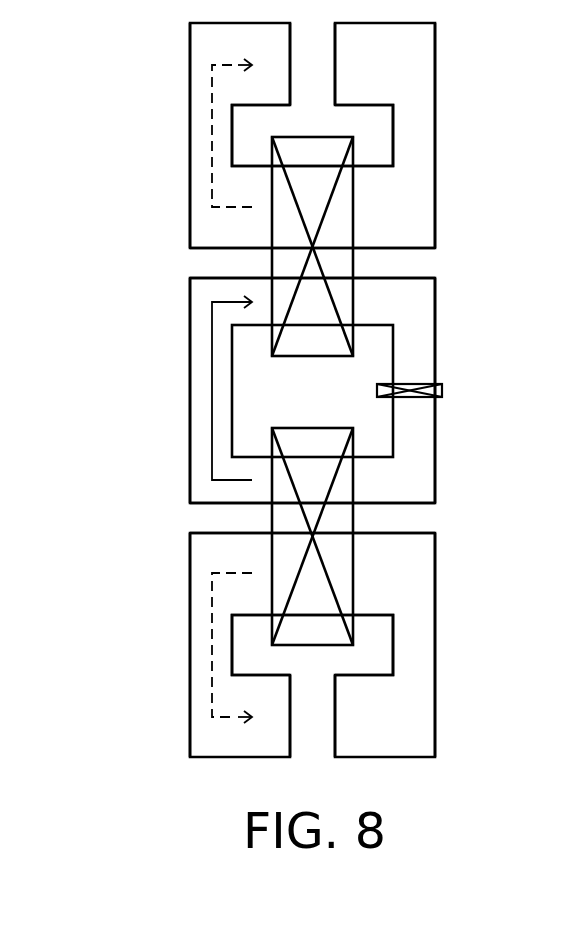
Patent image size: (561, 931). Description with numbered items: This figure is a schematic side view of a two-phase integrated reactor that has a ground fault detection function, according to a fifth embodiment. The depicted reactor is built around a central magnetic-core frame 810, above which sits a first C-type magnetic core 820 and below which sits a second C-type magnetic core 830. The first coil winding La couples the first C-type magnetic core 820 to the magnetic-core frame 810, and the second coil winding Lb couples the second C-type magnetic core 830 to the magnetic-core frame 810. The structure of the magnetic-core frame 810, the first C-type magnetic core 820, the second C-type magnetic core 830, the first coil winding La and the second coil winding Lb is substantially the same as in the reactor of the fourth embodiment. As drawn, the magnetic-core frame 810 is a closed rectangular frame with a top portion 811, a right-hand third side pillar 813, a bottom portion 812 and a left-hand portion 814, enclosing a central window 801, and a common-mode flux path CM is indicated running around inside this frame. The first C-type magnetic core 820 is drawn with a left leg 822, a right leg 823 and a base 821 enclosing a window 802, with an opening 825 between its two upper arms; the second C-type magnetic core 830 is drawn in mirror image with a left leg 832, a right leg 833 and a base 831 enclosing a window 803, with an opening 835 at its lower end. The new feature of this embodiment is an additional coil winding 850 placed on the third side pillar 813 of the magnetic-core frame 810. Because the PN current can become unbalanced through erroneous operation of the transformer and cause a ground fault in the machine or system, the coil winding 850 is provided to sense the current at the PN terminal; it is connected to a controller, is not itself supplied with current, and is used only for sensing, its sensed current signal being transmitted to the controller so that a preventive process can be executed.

The first C-type magnetic core 820 is at (189, 37).
The left leg of upper core 822 is at (198, 136).
The right leg of upper core 823 is at (423, 135).
The base of upper core 821 is at (368, 215).
The winding window of upper core 802 is at (255, 122).
The air gap of upper core 825 is at (316, 52).
The first coil winding La is at (313, 136).
The magnetic-core frame 810 is at (189, 292).
The top portion of middle core 811 is at (368, 300).
The third side pillar 813 is at (423, 346).
The bottom portion of middle core 812 is at (368, 475).
The left portion of middle core 814 is at (198, 392).
The winding window of middle core 801 is at (255, 376).
The common mode flux path CM is at (210, 450).
The coil winding 850 is at (443, 390).
The second coil winding Lb is at (313, 647).
The second C-type magnetic core 830 is at (189, 547).
The left leg of lower core 832 is at (198, 645).
The right leg of lower core 833 is at (423, 645).
The base of lower core 831 is at (368, 570).
The winding window of lower core 803 is at (255, 630).
The air gap of lower core 835 is at (316, 730).